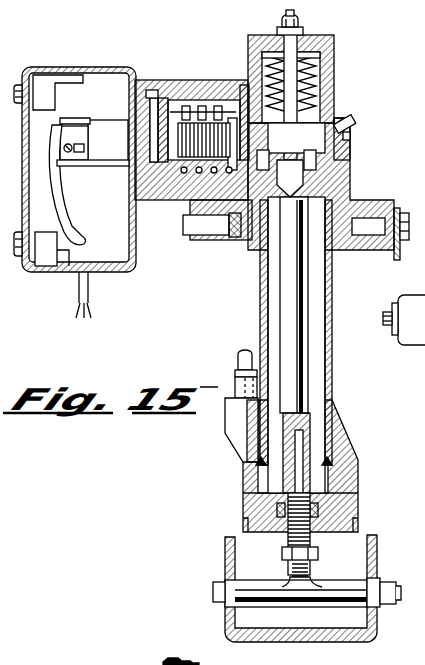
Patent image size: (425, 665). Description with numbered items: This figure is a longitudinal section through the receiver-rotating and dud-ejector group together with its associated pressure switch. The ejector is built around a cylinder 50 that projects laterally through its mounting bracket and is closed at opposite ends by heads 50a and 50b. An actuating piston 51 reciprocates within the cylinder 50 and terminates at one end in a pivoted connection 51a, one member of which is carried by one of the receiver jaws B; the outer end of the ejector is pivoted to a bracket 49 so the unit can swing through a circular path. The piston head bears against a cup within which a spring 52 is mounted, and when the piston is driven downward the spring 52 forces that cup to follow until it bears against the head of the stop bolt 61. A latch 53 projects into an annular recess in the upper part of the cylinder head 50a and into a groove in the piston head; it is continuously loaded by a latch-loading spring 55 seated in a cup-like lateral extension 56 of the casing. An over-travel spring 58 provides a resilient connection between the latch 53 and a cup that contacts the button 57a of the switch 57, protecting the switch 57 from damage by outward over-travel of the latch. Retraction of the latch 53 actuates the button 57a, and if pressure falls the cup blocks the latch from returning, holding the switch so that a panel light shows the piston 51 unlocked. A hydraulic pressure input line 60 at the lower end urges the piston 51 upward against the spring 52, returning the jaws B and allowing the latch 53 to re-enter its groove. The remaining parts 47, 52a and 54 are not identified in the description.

The valve housing 47 is at (341, 45).
The bracket 49 is at (193, 245).
The cylinder 50 is at (330, 312).
The cylinder head 50a is at (350, 189).
The head 50b is at (351, 146).
The actuating piston 51 is at (260, 274).
The pivoted connection 51a is at (361, 582).
The spring 52 is at (291, 82).
The valve seat 52a is at (278, 192).
The latch 53 is at (250, 115).
The contact disc stack 54 is at (193, 100).
The latch-loading spring 55 is at (153, 84).
The cup-like lateral extension 56 is at (270, 57).
The switch 57 is at (107, 166).
The button 57a is at (138, 190).
The over-travel spring 58 is at (167, 199).
The hydraulic pressure input line 60 is at (247, 350).
The bolt 61 is at (333, 62).
The jaw B is at (315, 637).